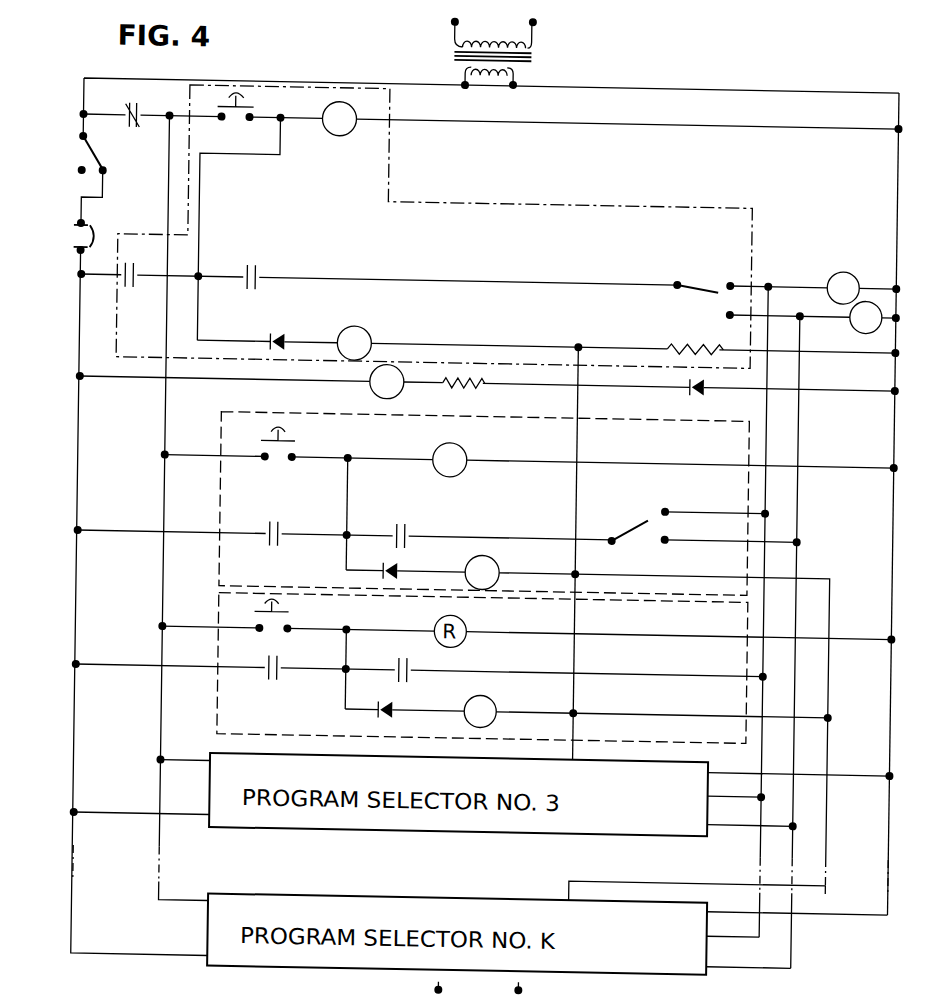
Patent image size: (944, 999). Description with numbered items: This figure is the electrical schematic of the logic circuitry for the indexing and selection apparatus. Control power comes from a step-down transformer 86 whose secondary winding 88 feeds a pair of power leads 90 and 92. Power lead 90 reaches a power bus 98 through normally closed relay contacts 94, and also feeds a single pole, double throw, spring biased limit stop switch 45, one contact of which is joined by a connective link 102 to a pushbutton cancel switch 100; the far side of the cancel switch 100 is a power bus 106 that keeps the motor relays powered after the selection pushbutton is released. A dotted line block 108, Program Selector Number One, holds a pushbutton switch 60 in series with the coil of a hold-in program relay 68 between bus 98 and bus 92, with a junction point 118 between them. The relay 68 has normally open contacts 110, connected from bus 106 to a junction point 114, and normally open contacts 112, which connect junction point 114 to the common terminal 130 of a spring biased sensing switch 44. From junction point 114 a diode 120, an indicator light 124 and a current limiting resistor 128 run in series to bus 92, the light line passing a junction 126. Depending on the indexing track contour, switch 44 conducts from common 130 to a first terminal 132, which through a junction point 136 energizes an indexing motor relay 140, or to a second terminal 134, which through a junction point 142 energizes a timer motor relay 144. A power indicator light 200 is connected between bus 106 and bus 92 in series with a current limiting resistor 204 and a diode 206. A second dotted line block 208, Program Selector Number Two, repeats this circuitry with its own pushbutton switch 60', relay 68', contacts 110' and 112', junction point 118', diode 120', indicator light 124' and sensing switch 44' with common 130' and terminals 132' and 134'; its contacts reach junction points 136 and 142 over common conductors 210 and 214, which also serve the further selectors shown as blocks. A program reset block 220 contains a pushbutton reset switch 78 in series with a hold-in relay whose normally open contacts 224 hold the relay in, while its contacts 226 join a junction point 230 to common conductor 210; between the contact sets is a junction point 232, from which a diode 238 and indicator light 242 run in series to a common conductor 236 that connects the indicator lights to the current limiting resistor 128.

The sensing switch 44 is at (690, 303).
The sensing switch 44' is at (643, 511).
The limit stop switch 45 is at (90, 150).
The pushbutton switch 60 is at (252, 89).
The pushbutton switch 60' is at (298, 444).
The program relay 68 is at (351, 128).
The program relay 68' is at (476, 453).
The reset switch 78 is at (261, 609).
The step-down transformer 86 is at (447, 29).
The secondary winding 88 is at (468, 71).
The power lead 90 is at (84, 100).
The power lead 92 is at (899, 146).
The normally closed relay contacts 94 is at (145, 109).
The power bus 98 is at (168, 475).
The cancel switch 100 is at (73, 235).
The connective link 102 is at (80, 205).
The power bus 106 is at (79, 400).
The dotted line block 108 is at (646, 196).
The normally open contacts 110 is at (137, 292).
The normally open contacts 110' is at (270, 513).
The normally open contacts 112 is at (234, 292).
The normally open contacts 112' is at (434, 523).
The junction point 114 is at (202, 273).
The junction point 118 is at (260, 227).
The junction point 118' is at (379, 500).
The diode 120 is at (290, 325).
The diode 120' is at (373, 562).
The indicator light 124 is at (361, 331).
The indicator light 124' is at (512, 571).
The junction 126 is at (578, 335).
The current limiting resistor 128 is at (698, 332).
The common terminal 130 is at (654, 271).
The common terminal 130' is at (600, 523).
The first terminal 132 is at (715, 272).
The first terminal 132' is at (715, 502).
The second terminal 134 is at (724, 329).
The second terminal 134' is at (730, 556).
The junction point 136 is at (771, 272).
The indexing motor relay 140 is at (856, 260).
The junction point 142 is at (800, 304).
The timer motor relay 144 is at (866, 318).
The power indicator light 200 is at (385, 392).
The current limiting resistor 204 is at (484, 398).
The diode 206 is at (701, 386).
The dotted line block 208 is at (646, 423).
The common conductor 210 is at (771, 421).
The common conductor 214 is at (800, 503).
The program reset block 220 is at (216, 693).
The normally open contacts 224 is at (270, 672).
The normally open contacts 226 is at (400, 662).
The junction point 230 is at (350, 622).
The junction point 232 is at (348, 662).
The common conductor 236 is at (582, 650).
The diode 238 is at (389, 692).
The indicator light 242 is at (497, 692).